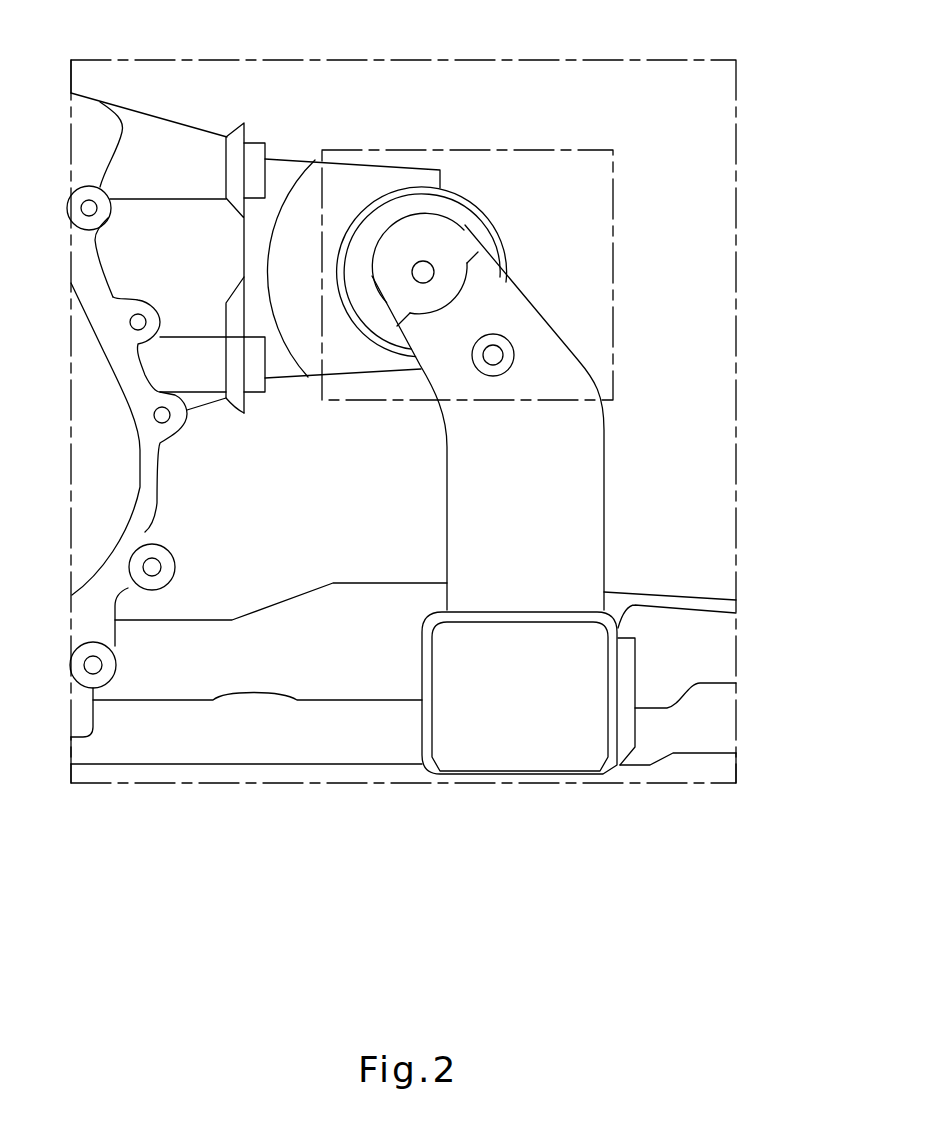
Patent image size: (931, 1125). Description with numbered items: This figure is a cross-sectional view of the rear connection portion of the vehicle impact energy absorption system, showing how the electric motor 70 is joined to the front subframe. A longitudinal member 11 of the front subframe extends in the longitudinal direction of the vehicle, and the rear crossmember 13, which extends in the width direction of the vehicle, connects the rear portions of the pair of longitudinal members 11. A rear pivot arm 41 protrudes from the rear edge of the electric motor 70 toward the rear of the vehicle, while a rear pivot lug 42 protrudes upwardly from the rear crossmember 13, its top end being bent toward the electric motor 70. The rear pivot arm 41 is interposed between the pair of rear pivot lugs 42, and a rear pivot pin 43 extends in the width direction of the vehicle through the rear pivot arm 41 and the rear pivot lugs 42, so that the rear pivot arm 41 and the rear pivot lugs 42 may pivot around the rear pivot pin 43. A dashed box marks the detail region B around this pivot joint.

The longitudinal member 11 is at (317, 743).
The rear crossmember 13 is at (430, 743).
The rear pivot arm 41 is at (353, 183).
The rear pivot lug 42 is at (590, 460).
The rear pivot pin 43 is at (423, 261).
The electric motor 70 is at (153, 138).
The detail region B is at (620, 240).